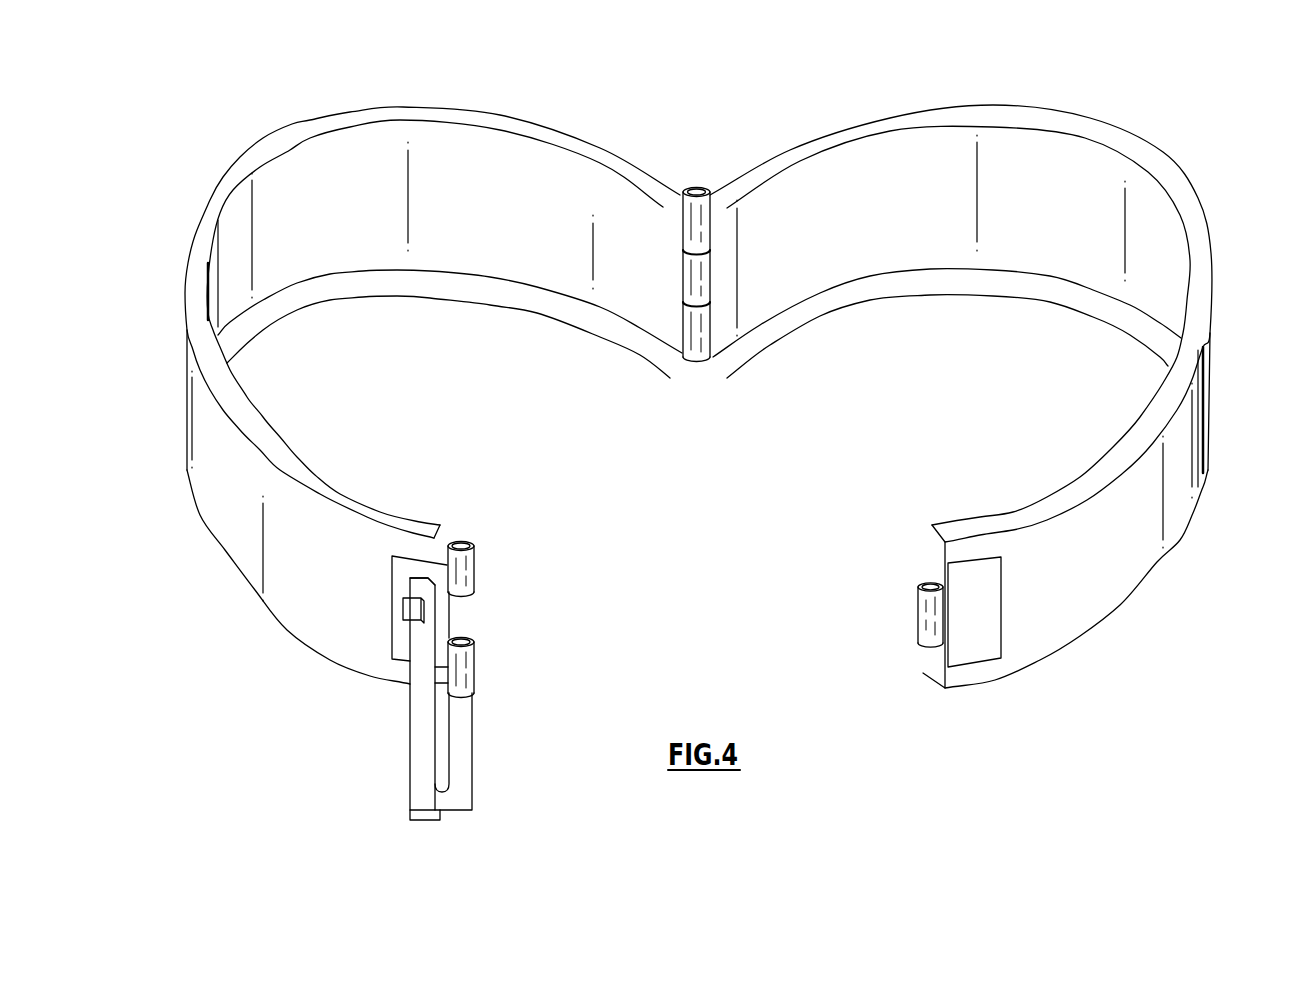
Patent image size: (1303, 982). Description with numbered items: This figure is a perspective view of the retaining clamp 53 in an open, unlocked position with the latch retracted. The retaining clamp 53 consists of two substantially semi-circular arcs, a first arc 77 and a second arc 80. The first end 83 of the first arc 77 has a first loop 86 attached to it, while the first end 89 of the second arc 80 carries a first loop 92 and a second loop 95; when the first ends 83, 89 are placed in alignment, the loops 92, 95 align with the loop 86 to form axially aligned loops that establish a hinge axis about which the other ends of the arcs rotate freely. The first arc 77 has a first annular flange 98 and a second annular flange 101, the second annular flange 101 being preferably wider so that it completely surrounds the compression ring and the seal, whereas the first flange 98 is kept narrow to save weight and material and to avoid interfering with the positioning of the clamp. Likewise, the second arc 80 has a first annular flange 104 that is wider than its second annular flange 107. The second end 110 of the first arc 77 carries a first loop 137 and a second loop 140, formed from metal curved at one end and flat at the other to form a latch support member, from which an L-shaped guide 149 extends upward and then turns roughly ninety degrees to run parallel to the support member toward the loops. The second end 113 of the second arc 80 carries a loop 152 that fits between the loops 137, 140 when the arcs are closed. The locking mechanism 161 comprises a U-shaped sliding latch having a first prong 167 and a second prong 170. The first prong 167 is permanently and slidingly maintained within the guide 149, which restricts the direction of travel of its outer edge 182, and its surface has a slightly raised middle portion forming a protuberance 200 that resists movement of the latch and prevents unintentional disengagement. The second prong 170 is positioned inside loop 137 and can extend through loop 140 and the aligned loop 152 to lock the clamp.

The retaining clamp 53 is at (1217, 150).
The first arc 77 is at (352, 152).
The second arc 80 is at (1118, 577).
The first end of the first arc 83 is at (675, 172).
The first loop 86 is at (690, 277).
The first end of the second arc 89 is at (713, 172).
The first loop 92 is at (703, 228).
The second loop 95 is at (698, 356).
The first annular flange 98 is at (453, 122).
The second annular flange 101 is at (438, 293).
The first annular flange 104 is at (968, 293).
The second annular flange 107 is at (1048, 113).
The second end of the first arc 110 is at (418, 510).
The second end of the second arc 113 is at (975, 698).
The first loop 137 is at (475, 563).
The second loop 140 is at (473, 668).
The L-shaped guide 149 is at (408, 603).
The loop 152 is at (935, 608).
The locking mechanism 161 is at (398, 835).
The first prong 167 is at (418, 782).
The second prong 170 is at (463, 782).
The outer edge of the first prong 182 is at (438, 618).
The protuberance 200 is at (415, 638).